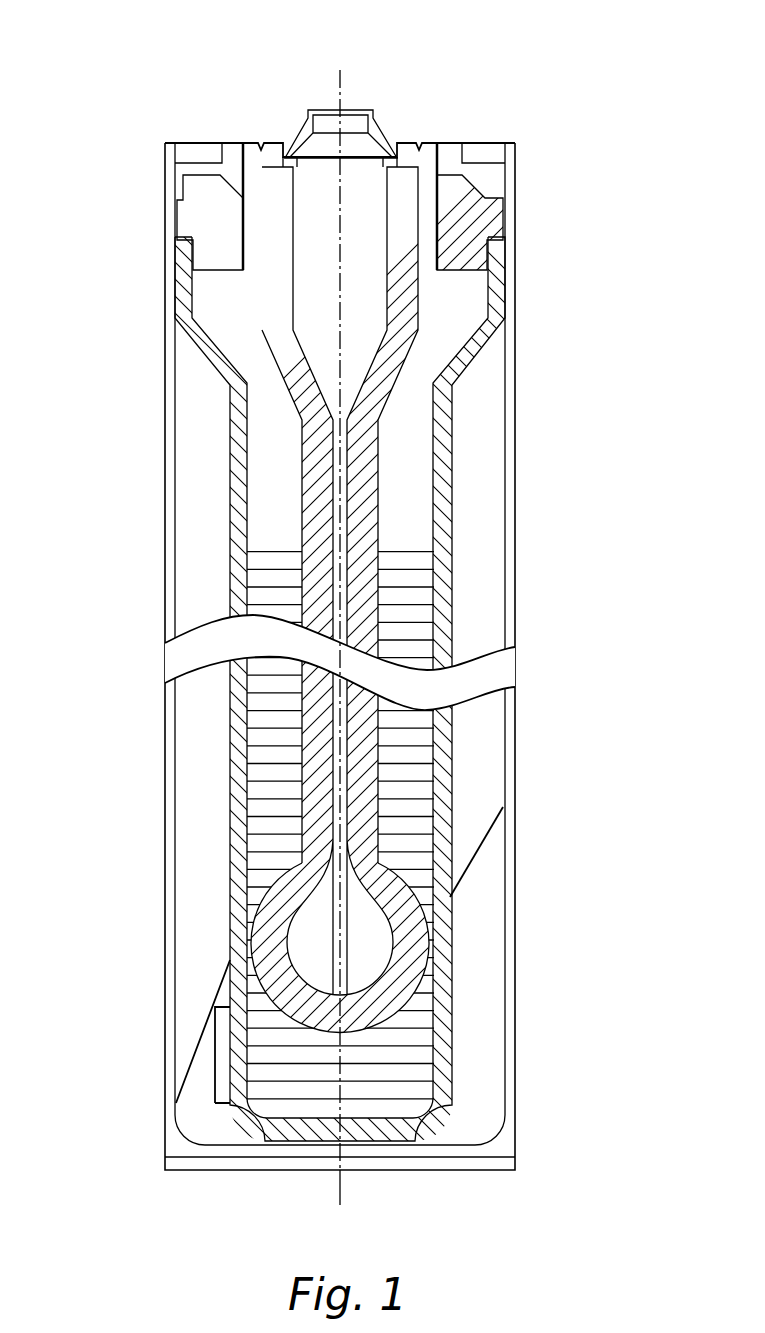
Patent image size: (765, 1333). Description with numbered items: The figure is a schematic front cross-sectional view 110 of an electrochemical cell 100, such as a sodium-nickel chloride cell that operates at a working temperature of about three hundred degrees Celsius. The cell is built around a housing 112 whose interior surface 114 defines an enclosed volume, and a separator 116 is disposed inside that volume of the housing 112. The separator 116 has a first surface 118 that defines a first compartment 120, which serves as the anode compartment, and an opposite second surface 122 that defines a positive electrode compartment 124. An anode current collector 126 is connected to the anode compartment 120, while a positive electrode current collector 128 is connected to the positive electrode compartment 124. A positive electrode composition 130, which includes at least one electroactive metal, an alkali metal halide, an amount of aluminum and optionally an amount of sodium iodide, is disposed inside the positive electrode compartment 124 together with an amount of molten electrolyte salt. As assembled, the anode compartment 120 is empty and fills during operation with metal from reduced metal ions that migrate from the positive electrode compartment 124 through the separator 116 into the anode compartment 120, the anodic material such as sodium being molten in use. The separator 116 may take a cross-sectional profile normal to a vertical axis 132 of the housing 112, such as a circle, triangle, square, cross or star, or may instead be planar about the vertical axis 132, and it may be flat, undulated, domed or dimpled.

The electrochemical cell 100 is at (548, 70).
The front cross-sectional view 110 is at (523, 163).
The housing 112 is at (515, 360).
The interior surface 114 is at (177, 943).
The separator 116 is at (453, 502).
The first surface 118 is at (452, 772).
The first compartment 120 is at (462, 1012).
The second surface 122 is at (247, 440).
The positive electrode compartment 124 is at (273, 510).
The anode current collector 126 is at (480, 852).
The positive electrode current collector 128 is at (407, 945).
The positive electrode composition 130 is at (277, 585).
The vertical axis 132 is at (342, 1188).